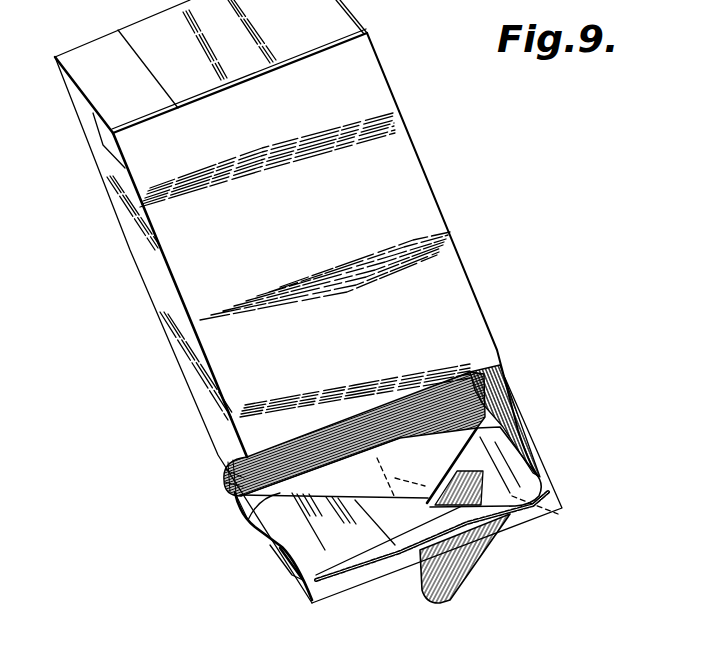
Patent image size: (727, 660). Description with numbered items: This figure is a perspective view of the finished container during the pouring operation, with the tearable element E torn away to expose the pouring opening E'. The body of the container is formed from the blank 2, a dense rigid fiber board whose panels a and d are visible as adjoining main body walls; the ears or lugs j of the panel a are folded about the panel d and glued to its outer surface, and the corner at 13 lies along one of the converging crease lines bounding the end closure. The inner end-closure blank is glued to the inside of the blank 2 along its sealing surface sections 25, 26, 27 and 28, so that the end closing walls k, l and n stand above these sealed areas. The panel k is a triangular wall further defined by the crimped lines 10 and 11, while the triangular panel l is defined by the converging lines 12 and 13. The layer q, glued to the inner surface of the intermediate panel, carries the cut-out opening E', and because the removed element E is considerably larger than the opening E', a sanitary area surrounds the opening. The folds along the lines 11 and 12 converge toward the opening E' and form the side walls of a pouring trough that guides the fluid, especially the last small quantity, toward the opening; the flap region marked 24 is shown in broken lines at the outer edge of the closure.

The blank 2 is at (423, 168).
The panel a is at (383, 140).
The panel d is at (187, 354).
The crease line 12 is at (488, 425).
The sealing surface section 26 is at (478, 428).
The pouring opening E' is at (502, 461).
The layer q is at (575, 444).
The crimped line 11 is at (510, 495).
The glue flap 24 is at (537, 512).
The tearable element E is at (467, 558).
The sealing surface section 25 is at (400, 551).
The crimped line 10 is at (353, 557).
The panel n is at (295, 546).
The triangular panel k is at (382, 548).
The ears or lugs j is at (287, 573).
The crease line 13 is at (248, 520).
The sealing surface section 28 is at (240, 495).
The triangular panel l is at (532, 380).
The sealing surface section 27 is at (393, 430).